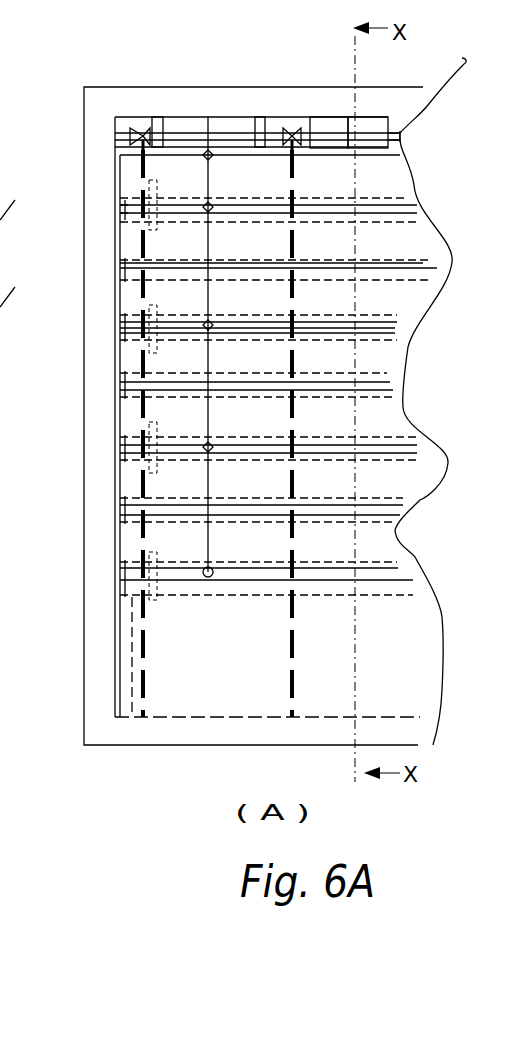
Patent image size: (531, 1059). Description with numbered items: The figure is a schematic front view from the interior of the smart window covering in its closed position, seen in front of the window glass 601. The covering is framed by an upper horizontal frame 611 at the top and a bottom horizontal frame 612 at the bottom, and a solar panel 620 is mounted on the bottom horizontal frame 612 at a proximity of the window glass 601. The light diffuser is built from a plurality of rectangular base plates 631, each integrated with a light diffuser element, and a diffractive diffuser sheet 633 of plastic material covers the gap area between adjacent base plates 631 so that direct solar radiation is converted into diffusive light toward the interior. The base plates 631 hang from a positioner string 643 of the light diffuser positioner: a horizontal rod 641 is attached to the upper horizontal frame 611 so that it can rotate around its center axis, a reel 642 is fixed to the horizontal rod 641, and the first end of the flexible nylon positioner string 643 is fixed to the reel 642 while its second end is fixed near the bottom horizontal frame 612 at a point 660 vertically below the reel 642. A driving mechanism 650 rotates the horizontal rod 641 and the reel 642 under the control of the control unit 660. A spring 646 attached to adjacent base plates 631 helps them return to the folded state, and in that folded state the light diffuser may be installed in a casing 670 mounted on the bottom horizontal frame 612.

The window glass 601 is at (11, 665).
The upper horizontal frame 611 is at (260, 96).
The bottom horizontal frame 612 is at (194, 728).
The solar panel 620 is at (125, 627).
The base plate 631 is at (125, 354).
The diffractive diffuser sheet 633 is at (128, 491).
The horizontal rod 641 is at (230, 129).
The reel 642 is at (142, 131).
The positioner string 643 is at (132, 243).
The spring 646 is at (140, 179).
The driving mechanism 650 is at (322, 126).
The control unit 660 is at (373, 126).
The casing 670 is at (128, 579).